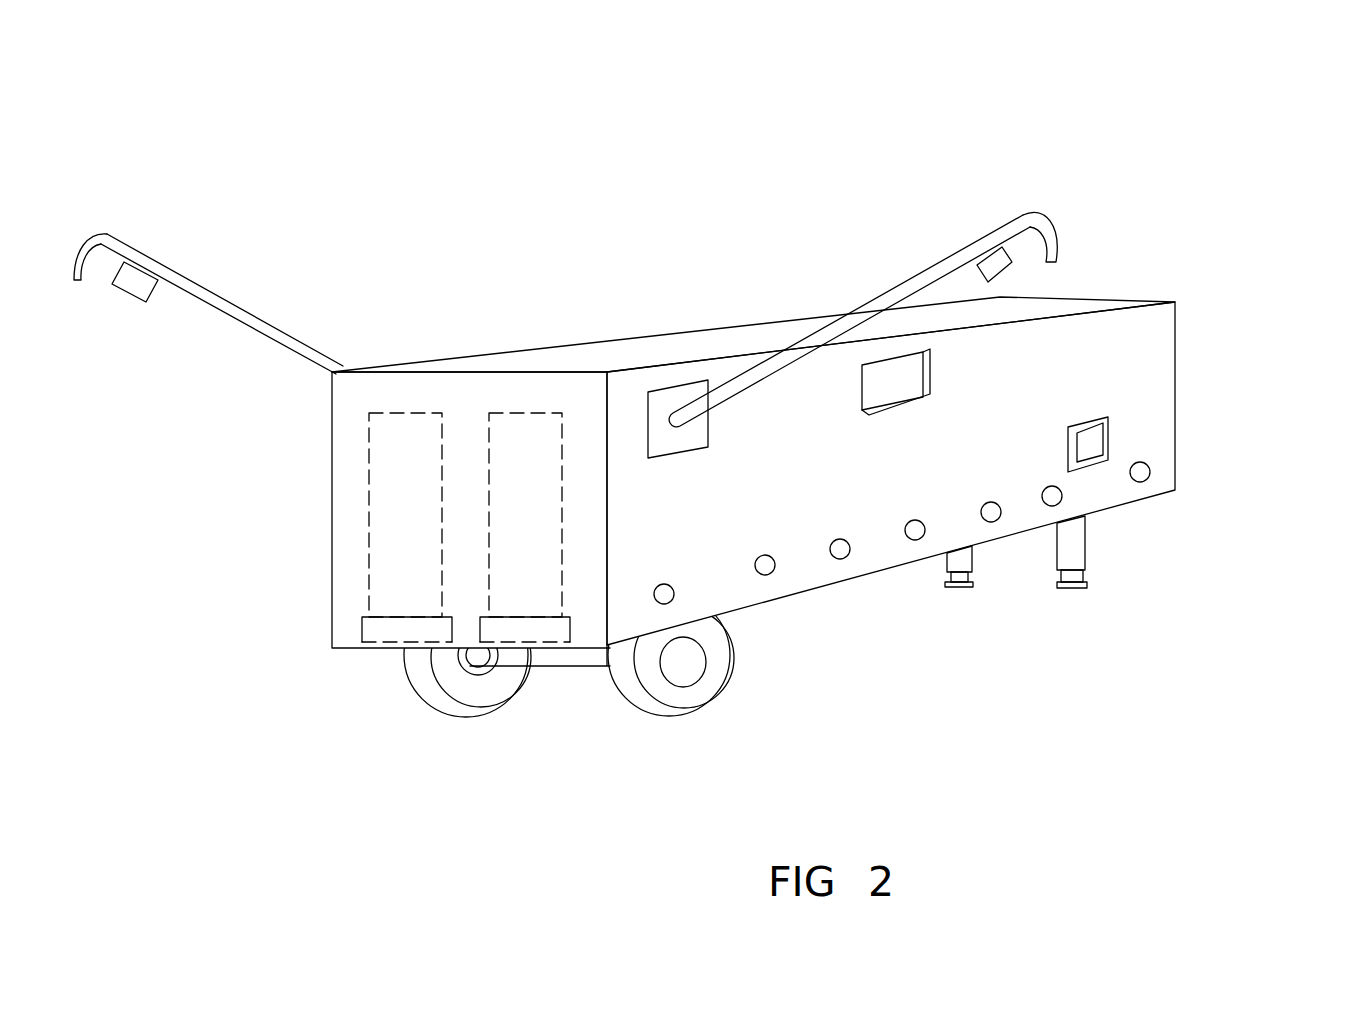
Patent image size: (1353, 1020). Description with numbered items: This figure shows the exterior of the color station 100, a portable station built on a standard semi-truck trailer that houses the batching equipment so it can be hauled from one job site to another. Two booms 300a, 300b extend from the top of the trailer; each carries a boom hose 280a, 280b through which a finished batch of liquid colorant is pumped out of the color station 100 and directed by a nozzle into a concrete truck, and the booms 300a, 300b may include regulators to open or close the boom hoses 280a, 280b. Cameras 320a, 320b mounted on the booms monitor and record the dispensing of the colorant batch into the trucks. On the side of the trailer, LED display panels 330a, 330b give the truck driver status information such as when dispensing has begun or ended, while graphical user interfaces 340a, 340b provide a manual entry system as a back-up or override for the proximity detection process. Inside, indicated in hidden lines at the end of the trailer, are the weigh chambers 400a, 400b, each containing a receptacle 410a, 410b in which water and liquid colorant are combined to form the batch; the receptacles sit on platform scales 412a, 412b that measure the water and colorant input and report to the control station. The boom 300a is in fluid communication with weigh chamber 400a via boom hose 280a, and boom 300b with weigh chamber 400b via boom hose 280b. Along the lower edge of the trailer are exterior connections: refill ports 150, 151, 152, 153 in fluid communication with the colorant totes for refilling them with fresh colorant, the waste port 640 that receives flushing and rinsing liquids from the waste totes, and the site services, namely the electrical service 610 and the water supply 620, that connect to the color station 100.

The color station 100 is at (982, 192).
The refill port 150 is at (772, 573).
The refill port 151 is at (848, 557).
The refill port 152 is at (917, 540).
The refill port 153 is at (997, 521).
The boom hose 280a is at (77, 237).
The boom hose 280b is at (1087, 200).
The boom 300a is at (228, 305).
The boom 300b is at (980, 248).
The camera 320a is at (126, 303).
The camera 320b is at (1009, 270).
The LED display panel 330a is at (587, 332).
The LED display panel 330b is at (880, 378).
The graphical user interface 340a is at (738, 313).
The graphical user interface 340b is at (1108, 432).
The weigh chamber 400a is at (383, 565).
The weigh chamber 400b is at (508, 453).
The receptacle 410a is at (377, 490).
The receptacle 410b is at (530, 562).
The scale 412a is at (385, 627).
The scale 412b is at (512, 628).
The electrical service 610 is at (1150, 474).
The water supply 620 is at (1061, 494).
The waste port 640 is at (672, 602).